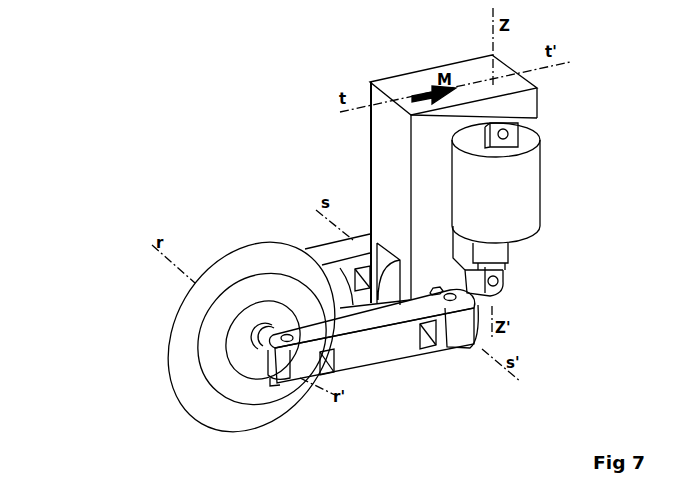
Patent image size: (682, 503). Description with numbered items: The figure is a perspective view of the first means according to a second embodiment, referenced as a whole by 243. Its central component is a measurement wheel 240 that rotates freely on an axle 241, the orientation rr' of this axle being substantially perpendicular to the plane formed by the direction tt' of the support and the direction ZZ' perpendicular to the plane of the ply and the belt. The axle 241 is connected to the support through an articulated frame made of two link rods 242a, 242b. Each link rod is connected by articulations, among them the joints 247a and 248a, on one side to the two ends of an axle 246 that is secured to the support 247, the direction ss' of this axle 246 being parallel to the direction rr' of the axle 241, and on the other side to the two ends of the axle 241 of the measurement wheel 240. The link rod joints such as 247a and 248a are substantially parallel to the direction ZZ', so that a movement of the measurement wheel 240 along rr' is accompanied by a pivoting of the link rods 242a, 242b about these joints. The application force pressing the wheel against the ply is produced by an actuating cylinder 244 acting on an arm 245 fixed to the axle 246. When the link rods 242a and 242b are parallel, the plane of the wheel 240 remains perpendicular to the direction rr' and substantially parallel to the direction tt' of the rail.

The measurement wheel 240 is at (178, 333).
The axle 241 is at (286, 370).
The link rod 242a is at (388, 355).
The link rod 242b is at (335, 250).
The wheel unit 243 is at (205, 192).
The actuating cylinder 244 is at (508, 188).
The arm 245 is at (490, 289).
The axle 246 is at (450, 333).
The support 247 is at (388, 178).
The articulation 247a is at (265, 347).
The articulation 248a is at (444, 301).